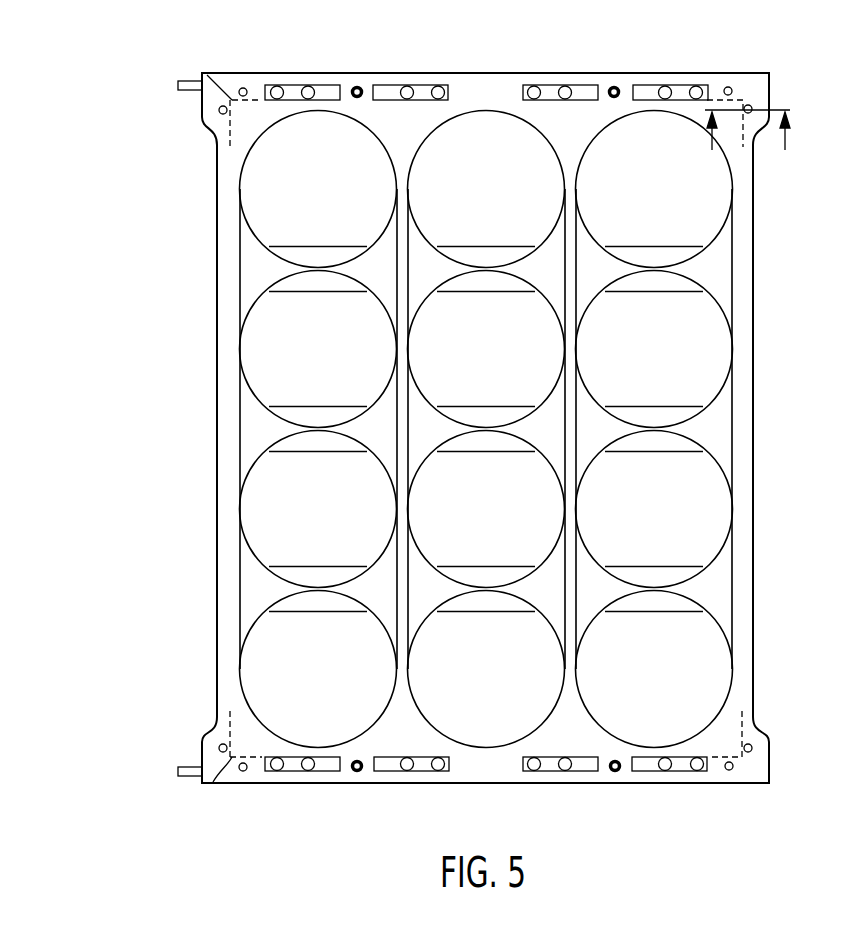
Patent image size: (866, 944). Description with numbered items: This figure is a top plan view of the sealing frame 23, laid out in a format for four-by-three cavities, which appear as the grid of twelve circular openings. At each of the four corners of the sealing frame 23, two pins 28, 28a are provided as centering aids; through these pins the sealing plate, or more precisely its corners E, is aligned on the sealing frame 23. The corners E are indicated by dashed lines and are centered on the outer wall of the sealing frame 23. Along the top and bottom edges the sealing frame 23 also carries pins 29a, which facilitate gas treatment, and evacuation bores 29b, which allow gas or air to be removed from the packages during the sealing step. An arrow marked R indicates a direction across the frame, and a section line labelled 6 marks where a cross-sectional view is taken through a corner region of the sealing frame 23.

The sealing frame 23 is at (228, 150).
The pin 28 is at (728, 86).
The pin 28a is at (752, 108).
The pin 29a is at (568, 86).
The evacuation bore 29b is at (614, 87).
The section line 6 is at (746, 145).
The corner E is at (207, 75).
The direction arrow R is at (442, 25).